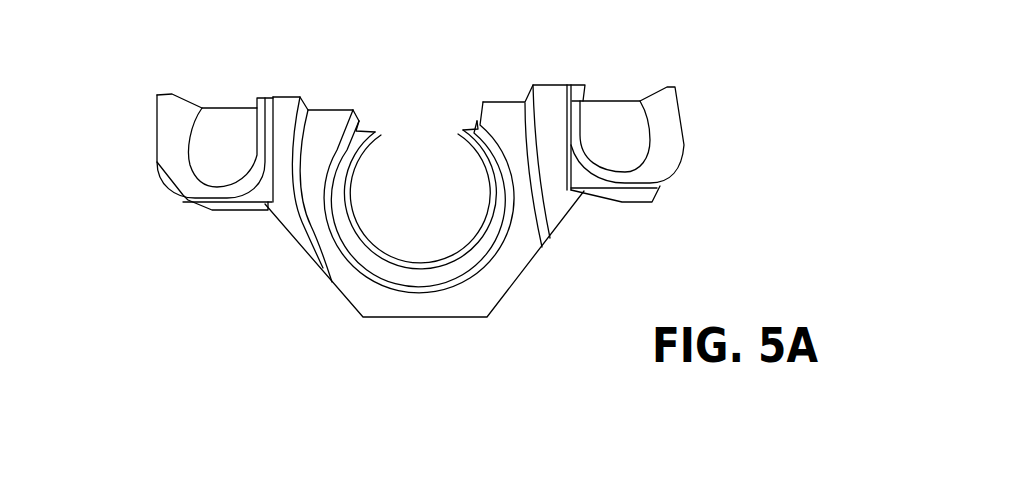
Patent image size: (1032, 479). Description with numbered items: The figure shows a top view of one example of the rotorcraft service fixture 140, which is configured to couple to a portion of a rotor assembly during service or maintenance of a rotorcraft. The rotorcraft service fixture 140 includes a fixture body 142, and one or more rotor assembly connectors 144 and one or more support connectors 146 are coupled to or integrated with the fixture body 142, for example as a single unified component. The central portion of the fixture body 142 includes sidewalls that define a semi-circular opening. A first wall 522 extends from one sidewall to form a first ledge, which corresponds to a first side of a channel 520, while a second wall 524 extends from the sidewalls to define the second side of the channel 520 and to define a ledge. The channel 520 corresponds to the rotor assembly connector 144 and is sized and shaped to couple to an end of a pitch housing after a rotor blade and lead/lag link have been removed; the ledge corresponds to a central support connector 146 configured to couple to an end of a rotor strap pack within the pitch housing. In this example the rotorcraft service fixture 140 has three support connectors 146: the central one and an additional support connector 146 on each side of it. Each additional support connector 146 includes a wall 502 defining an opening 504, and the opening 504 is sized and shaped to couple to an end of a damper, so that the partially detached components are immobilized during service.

The rotorcraft service fixture 140 is at (804, 33).
The fixture body 142 is at (354, 307).
The rotor assembly connector 144 is at (429, 182).
The support connector 146 is at (408, 119).
The wall 502 is at (160, 112).
The opening 504 is at (231, 106).
The channel 520 is at (484, 168).
The first wall 522 is at (487, 213).
The second wall 524 is at (485, 103).